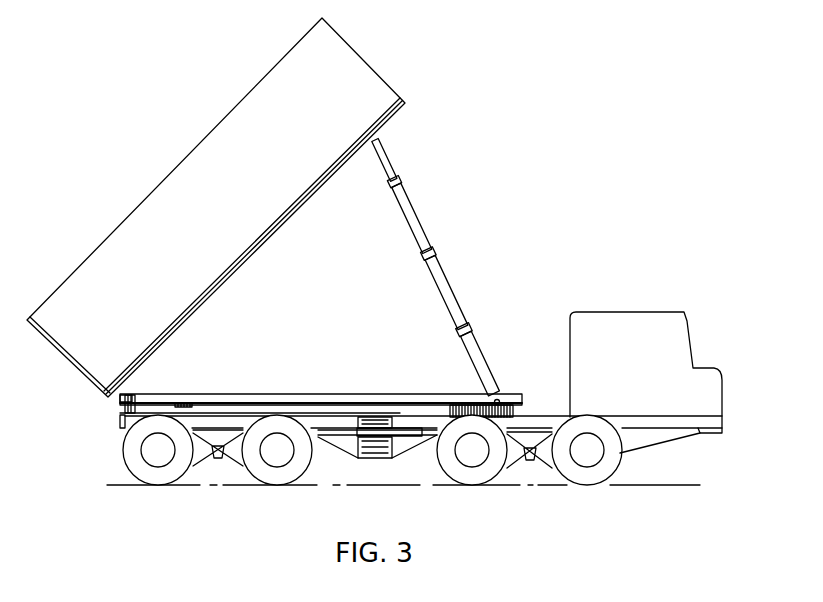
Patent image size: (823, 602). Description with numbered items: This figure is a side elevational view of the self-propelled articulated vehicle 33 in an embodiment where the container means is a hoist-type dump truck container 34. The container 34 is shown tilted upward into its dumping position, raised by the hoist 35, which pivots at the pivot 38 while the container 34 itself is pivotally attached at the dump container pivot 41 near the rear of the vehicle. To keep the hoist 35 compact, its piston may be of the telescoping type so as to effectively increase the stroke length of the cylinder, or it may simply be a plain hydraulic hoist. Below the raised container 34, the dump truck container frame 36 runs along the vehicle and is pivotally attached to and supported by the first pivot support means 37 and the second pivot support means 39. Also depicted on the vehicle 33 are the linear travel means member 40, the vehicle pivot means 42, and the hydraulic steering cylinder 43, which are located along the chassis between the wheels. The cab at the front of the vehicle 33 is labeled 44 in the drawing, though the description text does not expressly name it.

The self-propelled articulated vehicle 33 is at (641, 278).
The hoist-type dump truck container 34 is at (360, 80).
The hoist 35 is at (420, 213).
The dump truck container frame 36 is at (407, 402).
The first pivot support means 37 is at (507, 403).
The pivot 38 is at (497, 399).
The second pivot support means 39 is at (160, 405).
The linear travel means member 40 is at (217, 404).
The dump container pivot 41 is at (112, 398).
The vehicle pivot means 42 is at (374, 420).
The hydraulic steering cylinder 43 is at (366, 446).
The driver cab 44 is at (662, 362).